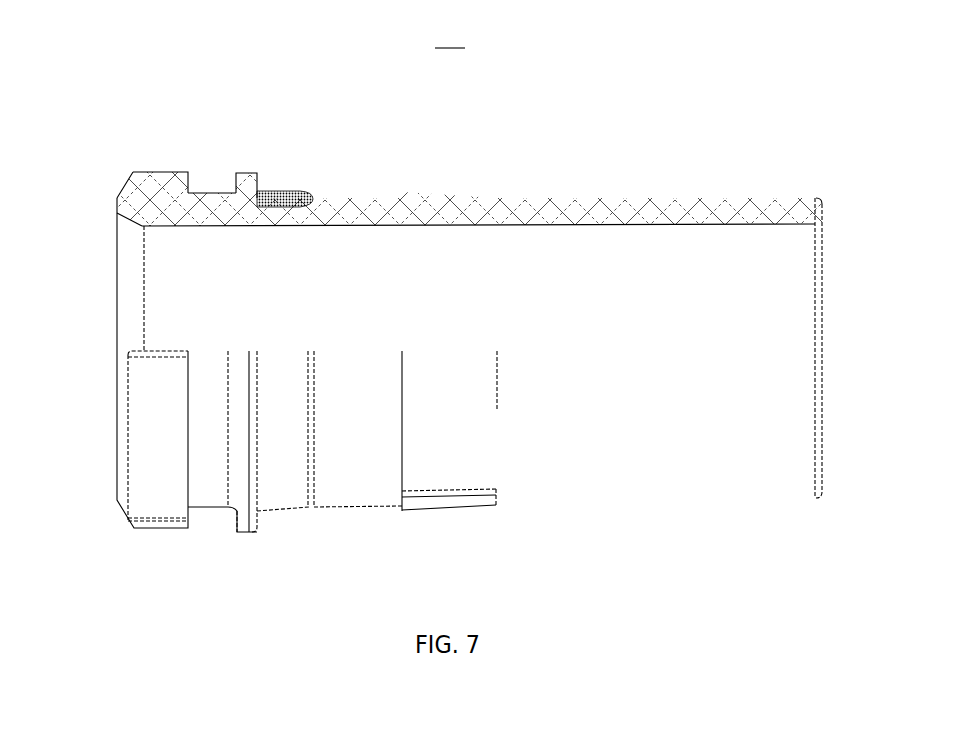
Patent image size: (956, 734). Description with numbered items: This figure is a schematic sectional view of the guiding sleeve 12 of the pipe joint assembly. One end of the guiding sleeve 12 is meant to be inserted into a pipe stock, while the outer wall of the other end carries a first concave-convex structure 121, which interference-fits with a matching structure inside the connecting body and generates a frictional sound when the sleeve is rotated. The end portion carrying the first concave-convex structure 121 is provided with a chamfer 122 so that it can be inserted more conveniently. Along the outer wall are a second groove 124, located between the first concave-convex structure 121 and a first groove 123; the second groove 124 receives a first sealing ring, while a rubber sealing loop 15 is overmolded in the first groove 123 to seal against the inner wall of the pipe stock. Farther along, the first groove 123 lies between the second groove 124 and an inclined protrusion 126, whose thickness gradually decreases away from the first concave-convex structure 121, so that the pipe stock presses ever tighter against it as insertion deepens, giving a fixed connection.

The guiding sleeve 12 is at (469, 276).
The first concave-convex structure 121 is at (156, 172).
The chamfer 122 is at (121, 188).
The first groove 123 is at (269, 205).
The second groove 124 is at (210, 183).
The sealing loop 15 is at (284, 190).
The inclined protrusion 126 is at (441, 504).